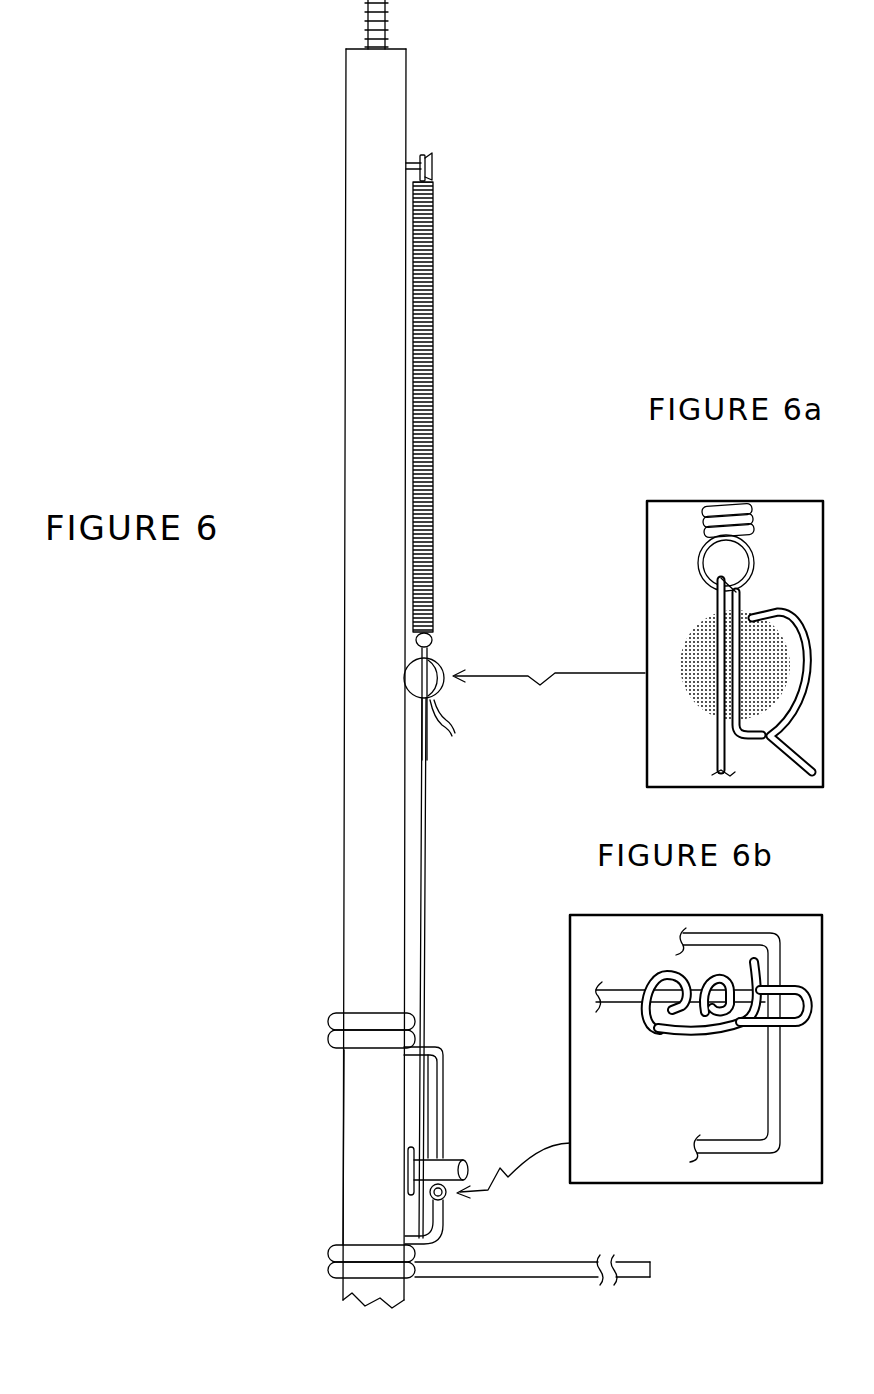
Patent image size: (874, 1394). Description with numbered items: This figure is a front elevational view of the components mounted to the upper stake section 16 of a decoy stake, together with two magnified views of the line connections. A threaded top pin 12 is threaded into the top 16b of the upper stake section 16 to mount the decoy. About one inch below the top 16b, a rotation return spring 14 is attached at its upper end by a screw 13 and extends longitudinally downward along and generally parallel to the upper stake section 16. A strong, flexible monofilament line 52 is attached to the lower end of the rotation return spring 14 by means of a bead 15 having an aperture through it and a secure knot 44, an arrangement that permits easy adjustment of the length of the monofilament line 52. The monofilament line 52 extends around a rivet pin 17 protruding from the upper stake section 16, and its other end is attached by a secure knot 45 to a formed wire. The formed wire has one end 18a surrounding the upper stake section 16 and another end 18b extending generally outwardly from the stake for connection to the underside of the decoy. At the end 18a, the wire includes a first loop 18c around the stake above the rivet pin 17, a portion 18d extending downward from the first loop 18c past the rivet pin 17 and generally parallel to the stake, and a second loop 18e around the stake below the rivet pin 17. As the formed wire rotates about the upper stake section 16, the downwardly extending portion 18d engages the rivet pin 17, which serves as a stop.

In FIG. 6, the threaded top pin 12 is at (392, 20).
In FIG. 6, the screw 13 is at (436, 165).
In FIG. 6, the rotation return spring 14 is at (440, 300).
In FIG. 6A, the rotation return spring 14 is at (752, 522).
In FIG. 6, the bead 15 is at (437, 690).
In FIG. 6A, the bead 15 is at (690, 640).
In FIG. 6, the upper stake section 16 is at (412, 100).
In FIG. 6, the top of the upper stake section 16b is at (357, 47).
In FIG. 6, the rivet pin 17 is at (462, 1156).
In FIG. 6, the end of the formed wire surrounding the upper stake section 18a is at (328, 1098).
In FIG. 6, the outwardly extending end of the formed wire 18b is at (525, 1277).
In FIG. 6, the first loop 18c is at (325, 1037).
In FIG. 6, the downwardly extending portion 18d is at (446, 1078).
In FIG. 6B, the downwardly extending portion 18d is at (772, 1110).
In FIG. 6, the second loop 18e is at (325, 1260).
In FIG. 6, the secure knot 44 is at (442, 652).
In FIG. 6A, the secure knot 44 is at (765, 716).
In FIG. 6, the secure knot 45 is at (449, 1196).
In FIG. 6B, the secure knot 45 is at (665, 1030).
In FIG. 6, the monofilament line 52 is at (434, 842).